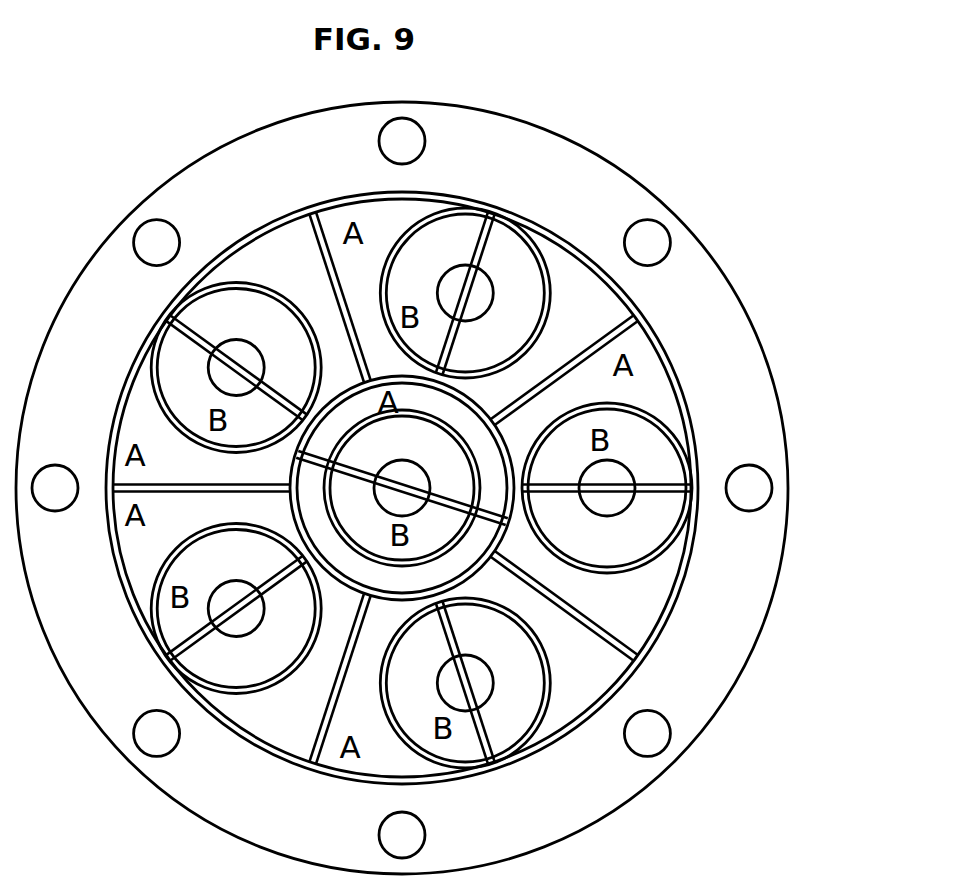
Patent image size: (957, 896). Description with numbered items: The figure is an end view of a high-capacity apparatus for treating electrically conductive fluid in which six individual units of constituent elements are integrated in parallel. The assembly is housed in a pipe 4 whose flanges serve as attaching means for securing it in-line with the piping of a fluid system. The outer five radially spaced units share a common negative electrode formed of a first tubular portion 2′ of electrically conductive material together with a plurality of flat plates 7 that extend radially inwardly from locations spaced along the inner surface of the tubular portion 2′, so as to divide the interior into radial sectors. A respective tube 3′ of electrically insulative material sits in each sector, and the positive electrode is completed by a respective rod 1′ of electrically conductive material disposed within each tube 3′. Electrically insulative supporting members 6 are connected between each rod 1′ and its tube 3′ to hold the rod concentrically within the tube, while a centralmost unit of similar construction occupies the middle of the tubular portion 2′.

The pipe 4 is at (750, 396).
The first tubular portion 2′ is at (285, 210).
The tube 3′ is at (268, 288).
The rod 1′ is at (262, 355).
The supporting member 6 is at (351, 474).
The flat plates 7 is at (336, 280).